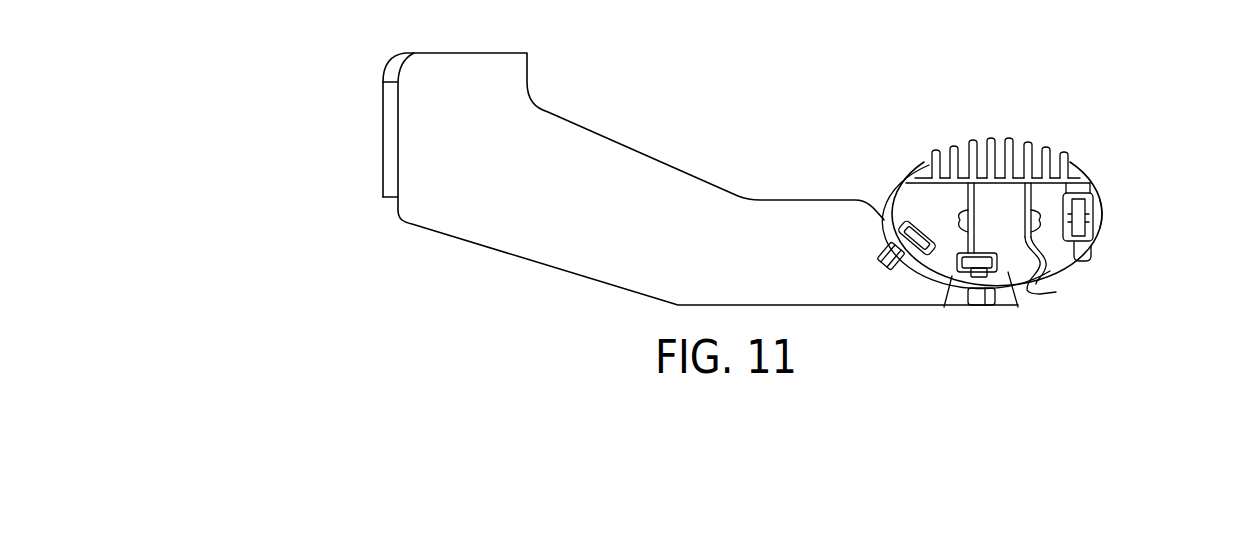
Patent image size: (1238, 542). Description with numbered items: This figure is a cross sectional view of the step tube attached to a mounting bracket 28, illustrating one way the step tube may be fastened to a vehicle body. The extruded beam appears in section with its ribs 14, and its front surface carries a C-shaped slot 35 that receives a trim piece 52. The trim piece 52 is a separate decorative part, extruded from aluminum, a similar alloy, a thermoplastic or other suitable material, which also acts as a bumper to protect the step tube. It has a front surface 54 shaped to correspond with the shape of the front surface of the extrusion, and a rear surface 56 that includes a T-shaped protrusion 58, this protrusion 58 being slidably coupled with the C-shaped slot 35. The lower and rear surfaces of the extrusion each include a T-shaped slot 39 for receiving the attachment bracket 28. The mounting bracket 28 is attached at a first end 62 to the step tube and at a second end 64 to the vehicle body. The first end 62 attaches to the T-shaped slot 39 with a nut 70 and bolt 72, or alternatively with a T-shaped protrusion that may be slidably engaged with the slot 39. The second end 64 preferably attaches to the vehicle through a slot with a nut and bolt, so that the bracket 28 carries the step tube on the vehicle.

The ribs 14 is at (985, 142).
The mounting bracket 28 is at (662, 185).
The C-shaped slot 35 is at (1083, 280).
The T-shaped slot 39 is at (953, 282).
The trim piece 52 is at (1097, 223).
The front surface 54 is at (1103, 212).
The rear surface 56 is at (1065, 163).
The T-shaped protrusion 58 is at (1093, 253).
The first end 62 is at (962, 302).
The second end 64 is at (537, 127).
The nut 70 is at (990, 307).
The bolt 72 is at (1015, 282).